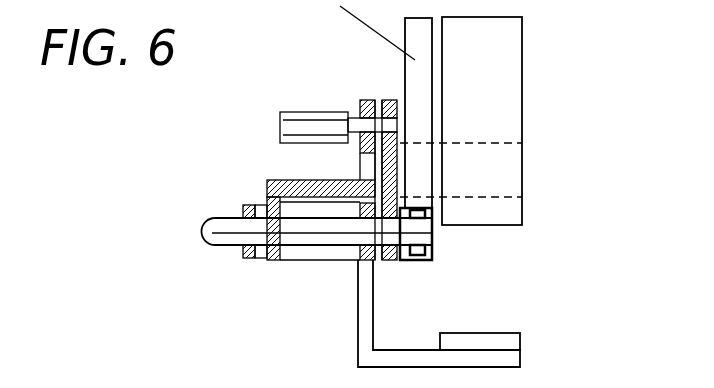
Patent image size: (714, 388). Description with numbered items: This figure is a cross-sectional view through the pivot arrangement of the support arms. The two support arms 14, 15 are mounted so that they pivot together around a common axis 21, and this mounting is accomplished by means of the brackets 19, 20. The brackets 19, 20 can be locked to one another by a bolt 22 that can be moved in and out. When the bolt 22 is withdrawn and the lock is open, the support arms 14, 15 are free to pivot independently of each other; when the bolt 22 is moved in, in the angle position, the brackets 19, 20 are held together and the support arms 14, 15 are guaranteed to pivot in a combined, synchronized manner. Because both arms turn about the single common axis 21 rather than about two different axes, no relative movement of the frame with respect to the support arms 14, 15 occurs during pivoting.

The support arm 14 is at (470, 340).
The support arm 15 is at (492, 82).
The bracket 19 is at (365, 315).
The bracket 20 is at (293, 182).
The common axis 21 is at (325, 233).
The bolt 22 is at (362, 113).